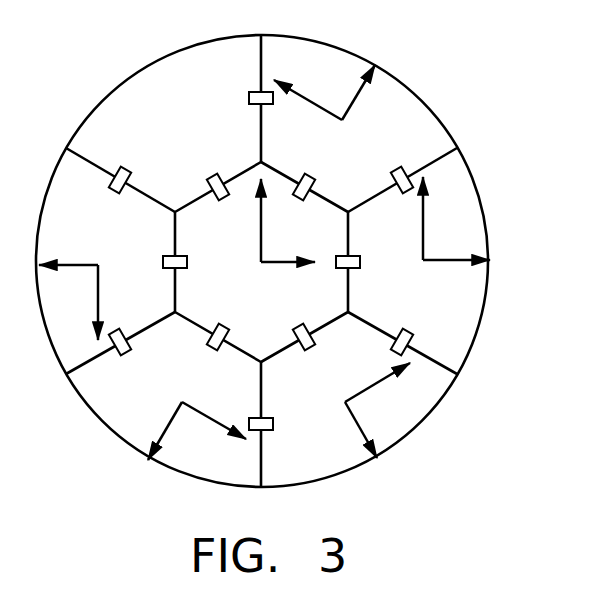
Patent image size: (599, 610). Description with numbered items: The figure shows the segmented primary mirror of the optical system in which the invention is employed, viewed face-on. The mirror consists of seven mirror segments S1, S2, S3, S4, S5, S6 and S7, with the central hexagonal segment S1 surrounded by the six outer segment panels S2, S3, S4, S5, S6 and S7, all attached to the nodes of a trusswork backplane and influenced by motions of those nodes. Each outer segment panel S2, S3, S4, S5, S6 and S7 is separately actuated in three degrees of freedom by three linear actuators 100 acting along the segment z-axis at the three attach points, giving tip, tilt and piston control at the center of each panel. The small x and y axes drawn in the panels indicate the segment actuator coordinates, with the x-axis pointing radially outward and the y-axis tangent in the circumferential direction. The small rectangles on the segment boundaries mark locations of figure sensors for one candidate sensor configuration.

The linear actuators 100 is at (249, 97).
The mirror segment S1 is at (261, 262).
The mirror segment S2 is at (359, 399).
The mirror segment S3 is at (427, 223).
The mirror segment S4 is at (325, 103).
The mirror segment S5 is at (149, 163).
The mirror segment S6 is at (94, 296).
The mirror segment S7 is at (191, 418).